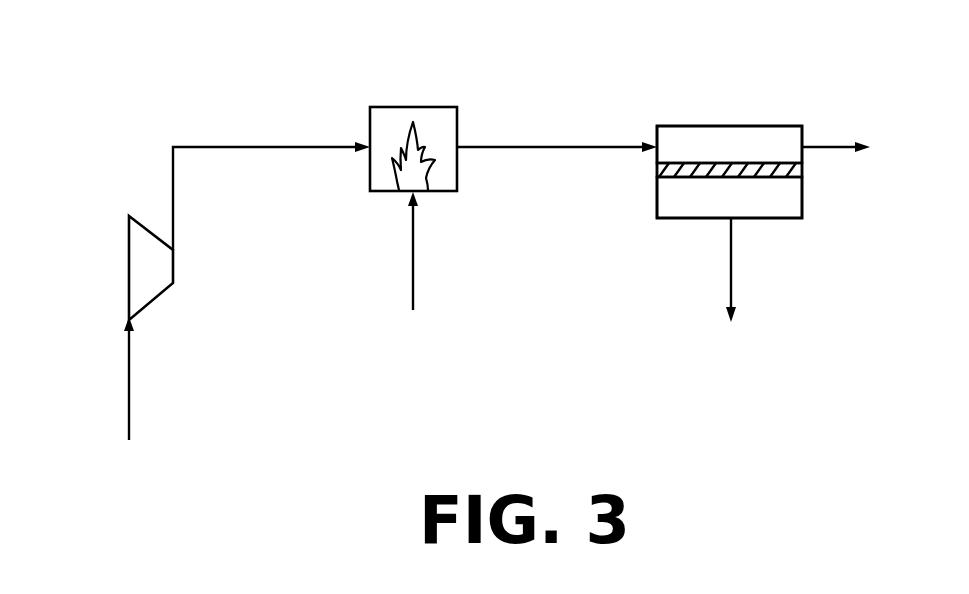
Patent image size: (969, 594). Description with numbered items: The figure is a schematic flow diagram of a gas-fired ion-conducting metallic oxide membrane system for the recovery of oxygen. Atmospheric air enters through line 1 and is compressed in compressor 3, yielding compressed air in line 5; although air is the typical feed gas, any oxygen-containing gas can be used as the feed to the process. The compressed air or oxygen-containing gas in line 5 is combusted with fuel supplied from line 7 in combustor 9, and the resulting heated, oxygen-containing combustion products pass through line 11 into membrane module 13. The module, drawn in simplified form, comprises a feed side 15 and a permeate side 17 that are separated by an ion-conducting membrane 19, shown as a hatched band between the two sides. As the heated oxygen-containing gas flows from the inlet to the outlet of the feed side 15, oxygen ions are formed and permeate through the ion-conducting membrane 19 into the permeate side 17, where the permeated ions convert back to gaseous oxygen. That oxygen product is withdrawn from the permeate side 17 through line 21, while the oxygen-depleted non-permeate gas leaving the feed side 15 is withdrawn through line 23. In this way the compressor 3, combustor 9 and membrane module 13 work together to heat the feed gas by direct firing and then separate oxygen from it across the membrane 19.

The line 1 is at (129, 372).
The compressor 3 is at (175, 266).
The line 5 is at (288, 146).
The line 7 is at (413, 247).
The combustor 9 is at (392, 107).
The line 11 is at (553, 145).
The membrane module 13 is at (677, 173).
The feed side 15 is at (717, 140).
The permeate side 17 is at (775, 200).
The ion-conducting membrane 19 is at (728, 175).
The line 21 is at (731, 253).
The line 23 is at (833, 145).